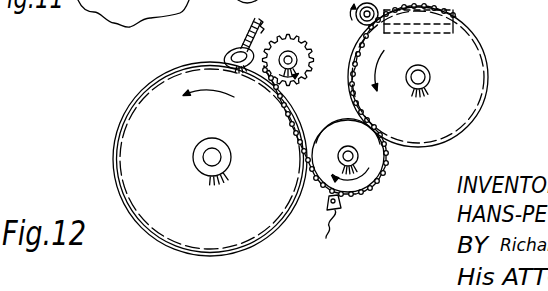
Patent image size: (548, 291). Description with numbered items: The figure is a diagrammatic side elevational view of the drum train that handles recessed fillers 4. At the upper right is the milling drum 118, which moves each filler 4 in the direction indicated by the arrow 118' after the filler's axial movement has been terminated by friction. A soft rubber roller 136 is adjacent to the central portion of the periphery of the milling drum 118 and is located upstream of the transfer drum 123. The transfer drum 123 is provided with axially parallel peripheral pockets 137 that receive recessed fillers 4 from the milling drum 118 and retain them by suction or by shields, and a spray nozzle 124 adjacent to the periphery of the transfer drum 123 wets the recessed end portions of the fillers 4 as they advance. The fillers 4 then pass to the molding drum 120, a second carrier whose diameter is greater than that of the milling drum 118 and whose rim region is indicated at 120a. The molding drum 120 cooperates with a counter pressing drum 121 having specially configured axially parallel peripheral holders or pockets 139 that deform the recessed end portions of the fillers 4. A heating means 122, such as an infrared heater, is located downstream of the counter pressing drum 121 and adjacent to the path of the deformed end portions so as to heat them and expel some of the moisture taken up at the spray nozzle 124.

The filler 4 is at (384, 168).
The milling drum 118 is at (447, 77).
The arrow 118' is at (399, 67).
The molding drum 120 is at (152, 82).
The wheel rim 120a is at (285, 97).
The counter pressing drum 121 is at (305, 40).
The heating means 122 is at (225, 50).
The transfer drum 123 is at (319, 124).
The spray nozzle 124 is at (341, 215).
The soft rubber roller 136 is at (359, 23).
The peripheral pockets 137 is at (392, 160).
The peripheral holders or pockets 139 is at (266, 43).